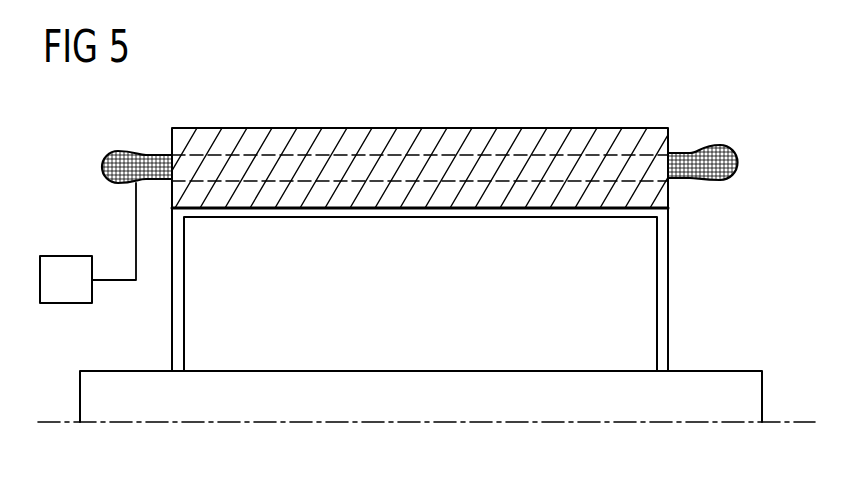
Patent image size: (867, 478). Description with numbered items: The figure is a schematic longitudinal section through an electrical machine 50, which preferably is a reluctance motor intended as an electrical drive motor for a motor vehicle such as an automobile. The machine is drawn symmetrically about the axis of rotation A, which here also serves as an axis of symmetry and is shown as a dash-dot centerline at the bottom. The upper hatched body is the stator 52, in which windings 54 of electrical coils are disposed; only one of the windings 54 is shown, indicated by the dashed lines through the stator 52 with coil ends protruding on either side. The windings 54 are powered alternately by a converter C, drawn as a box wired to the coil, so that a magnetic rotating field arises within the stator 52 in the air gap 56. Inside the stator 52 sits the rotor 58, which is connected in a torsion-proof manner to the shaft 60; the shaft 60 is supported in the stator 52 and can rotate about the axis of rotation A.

The electrical machine 50 is at (688, 104).
The stator 52 is at (588, 135).
The windings 54 is at (522, 155).
The air gap 56 is at (650, 210).
The rotor 58 is at (640, 261).
The shaft 60 is at (718, 369).
The converter C is at (66, 256).
The axis of rotation A is at (805, 420).